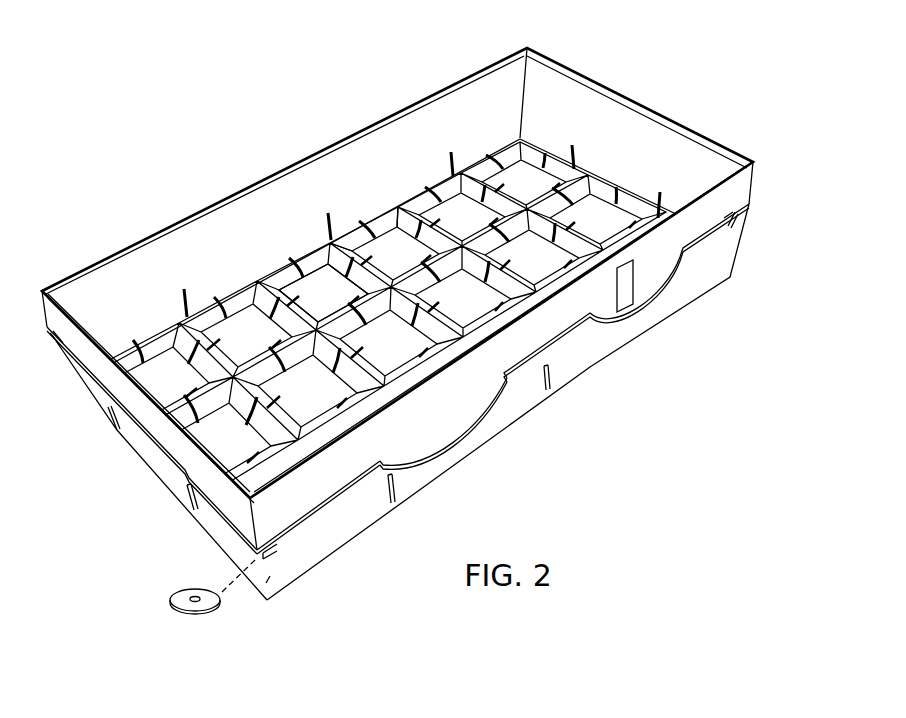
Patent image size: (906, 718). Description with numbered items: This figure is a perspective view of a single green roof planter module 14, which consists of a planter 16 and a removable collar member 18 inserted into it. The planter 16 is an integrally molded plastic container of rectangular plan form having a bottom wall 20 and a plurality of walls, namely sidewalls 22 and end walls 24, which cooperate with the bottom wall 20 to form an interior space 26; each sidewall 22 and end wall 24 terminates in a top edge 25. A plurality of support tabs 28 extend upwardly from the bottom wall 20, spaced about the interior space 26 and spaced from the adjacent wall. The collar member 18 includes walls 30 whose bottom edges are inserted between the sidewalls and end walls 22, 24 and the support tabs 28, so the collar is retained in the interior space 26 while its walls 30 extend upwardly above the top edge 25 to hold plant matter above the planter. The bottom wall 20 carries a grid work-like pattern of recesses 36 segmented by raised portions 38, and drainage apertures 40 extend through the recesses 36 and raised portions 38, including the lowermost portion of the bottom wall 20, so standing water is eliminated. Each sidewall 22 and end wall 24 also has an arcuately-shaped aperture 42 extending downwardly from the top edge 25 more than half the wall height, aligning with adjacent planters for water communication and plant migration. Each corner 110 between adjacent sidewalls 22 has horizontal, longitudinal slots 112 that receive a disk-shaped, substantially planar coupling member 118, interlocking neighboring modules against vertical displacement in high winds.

The green roof planter module 14 is at (203, 128).
The planter 16 is at (617, 360).
The collar member 18 is at (96, 242).
The bottom wall 20 is at (416, 195).
The sidewall 22 is at (513, 395).
The end wall 24 is at (180, 487).
The top edge 25 is at (340, 500).
The interior space 26 is at (557, 102).
The support tab 28 is at (194, 293).
The wall 30 is at (403, 437).
The recess 36 is at (318, 272).
The raised portion 38 is at (373, 225).
The drainage aperture 40 is at (412, 218).
The arcuately-shaped aperture 42 is at (477, 423).
The corner 110 is at (726, 222).
The slot 112 is at (748, 212).
The coupling member 118 is at (178, 596).